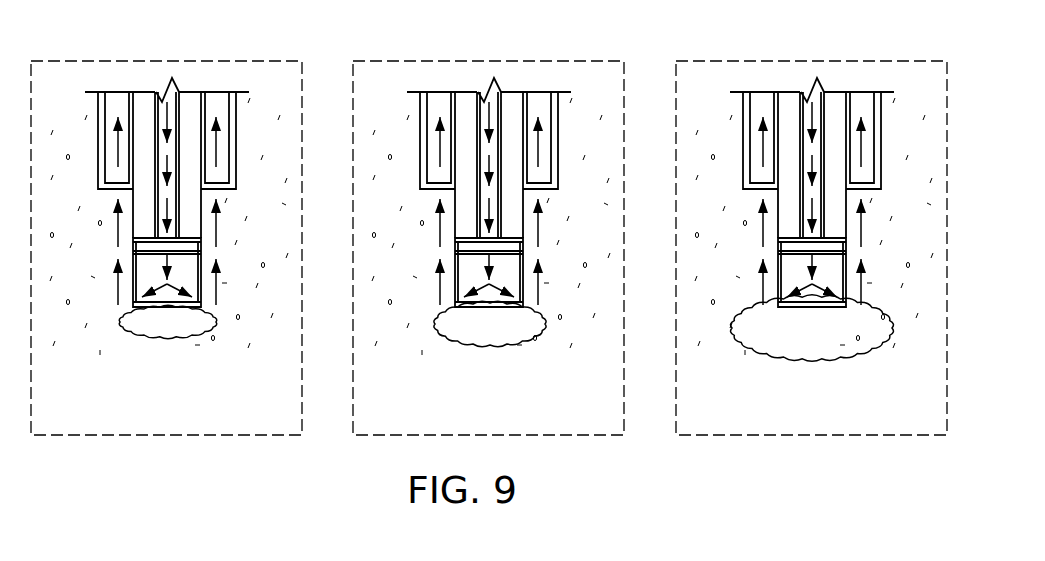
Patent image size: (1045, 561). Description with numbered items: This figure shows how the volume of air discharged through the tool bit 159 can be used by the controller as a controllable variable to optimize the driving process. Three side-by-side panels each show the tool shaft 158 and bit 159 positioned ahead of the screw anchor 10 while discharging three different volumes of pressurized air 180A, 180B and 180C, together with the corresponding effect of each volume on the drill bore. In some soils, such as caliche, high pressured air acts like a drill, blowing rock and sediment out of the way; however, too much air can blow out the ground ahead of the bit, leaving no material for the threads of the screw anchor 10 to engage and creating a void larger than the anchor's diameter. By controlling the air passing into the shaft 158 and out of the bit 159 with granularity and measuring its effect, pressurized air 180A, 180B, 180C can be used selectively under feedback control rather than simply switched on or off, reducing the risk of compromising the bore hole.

The screw anchor 10 is at (235, 122).
The tool shaft 158 is at (142, 110).
The tool bit 159 is at (133, 258).
The pressurized air 180A is at (173, 337).
The pressurized air 180B is at (506, 345).
The pressurized air 180C is at (822, 360).